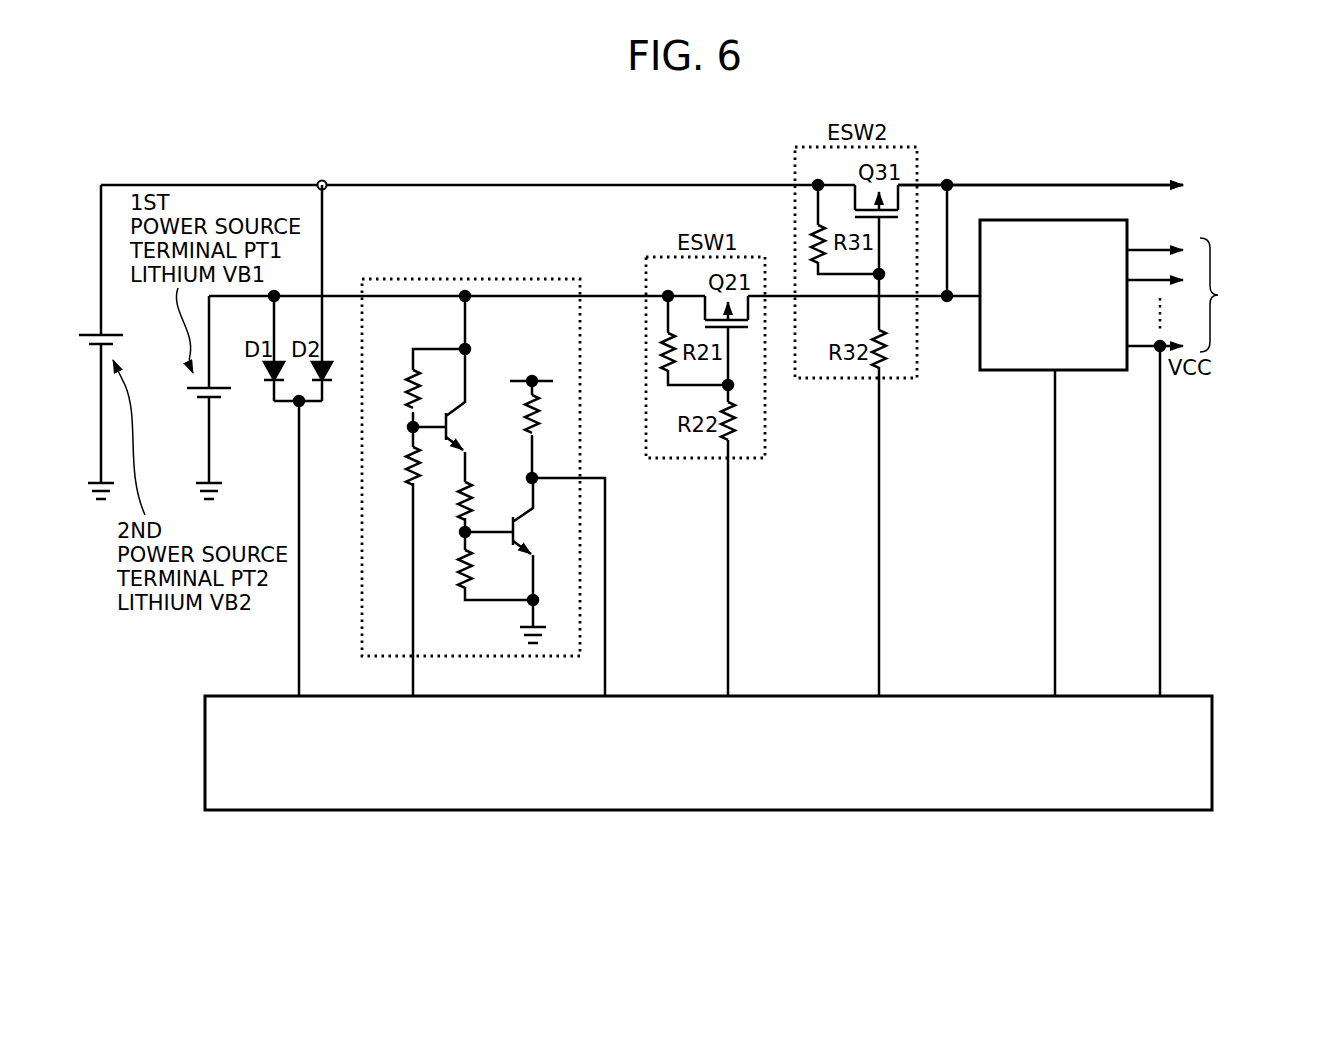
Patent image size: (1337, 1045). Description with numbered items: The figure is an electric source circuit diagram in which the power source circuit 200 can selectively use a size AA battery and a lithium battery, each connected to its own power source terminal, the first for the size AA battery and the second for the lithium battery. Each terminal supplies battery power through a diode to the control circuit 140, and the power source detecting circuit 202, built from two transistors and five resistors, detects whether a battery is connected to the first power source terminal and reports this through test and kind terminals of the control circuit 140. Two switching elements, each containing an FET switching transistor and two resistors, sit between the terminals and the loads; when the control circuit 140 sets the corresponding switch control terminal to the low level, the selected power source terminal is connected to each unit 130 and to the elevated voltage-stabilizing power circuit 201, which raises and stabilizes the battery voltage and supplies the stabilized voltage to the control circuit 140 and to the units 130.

The power source circuit 200 is at (1122, 130).
The elevated voltage-stabilizing power circuit 201 is at (1110, 370).
The power source detecting circuit 202 is at (482, 442).
The control circuit 140 is at (205, 757).
The units 130 is at (1211, 251).